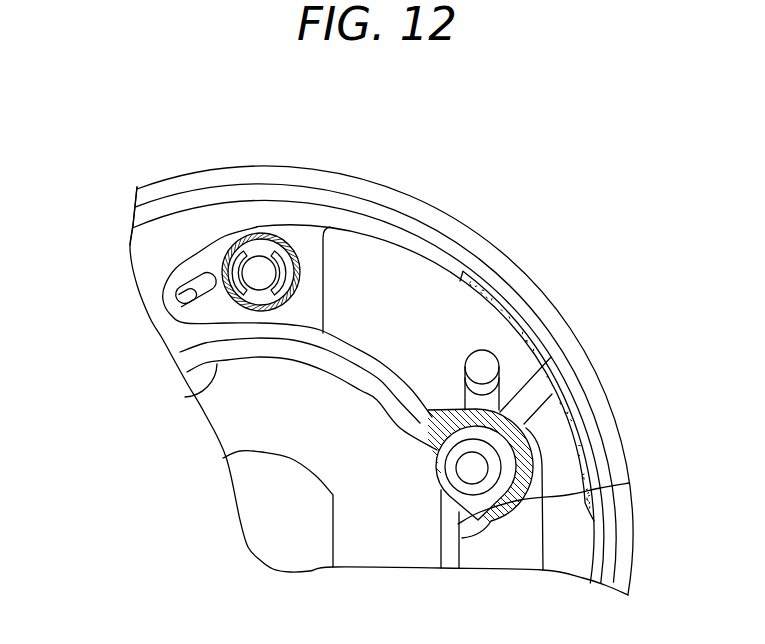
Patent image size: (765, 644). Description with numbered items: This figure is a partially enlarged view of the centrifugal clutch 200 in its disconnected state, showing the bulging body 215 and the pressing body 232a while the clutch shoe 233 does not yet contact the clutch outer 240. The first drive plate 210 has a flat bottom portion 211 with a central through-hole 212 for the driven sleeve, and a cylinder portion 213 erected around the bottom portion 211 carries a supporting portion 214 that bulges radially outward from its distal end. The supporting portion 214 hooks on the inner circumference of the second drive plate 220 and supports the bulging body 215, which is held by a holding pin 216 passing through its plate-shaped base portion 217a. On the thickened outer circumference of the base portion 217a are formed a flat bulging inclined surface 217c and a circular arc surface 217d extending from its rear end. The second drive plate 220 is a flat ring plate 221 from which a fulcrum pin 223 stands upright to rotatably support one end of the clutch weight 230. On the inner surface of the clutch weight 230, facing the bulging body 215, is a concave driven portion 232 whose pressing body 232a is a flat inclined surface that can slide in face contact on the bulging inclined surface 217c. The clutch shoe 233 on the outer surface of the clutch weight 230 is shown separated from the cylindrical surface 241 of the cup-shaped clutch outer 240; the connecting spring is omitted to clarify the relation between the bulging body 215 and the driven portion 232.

The centrifugal clutch 200 is at (130, 123).
The first drive plate 210 is at (176, 342).
The bottom portion 211 is at (240, 437).
The through-hole 212 is at (263, 464).
The cylinder portion 213 is at (192, 392).
The supporting portion 214 is at (442, 502).
The bulging body 215 is at (433, 437).
The holding pin 216 is at (440, 452).
The base portion 217a is at (553, 348).
The bulging inclined surface 217c is at (633, 483).
The circular arc surface 217d is at (455, 404).
The second drive plate 220 is at (163, 208).
The ring plate 221 is at (142, 243).
The fulcrum pin 223 is at (258, 226).
The clutch weight 230 is at (316, 226).
The driven portion 232 is at (520, 420).
The pressing body 232a is at (443, 535).
The clutch shoe 233 is at (465, 268).
The clutch outer 240 is at (633, 584).
The cylindrical surface 241 is at (610, 551).